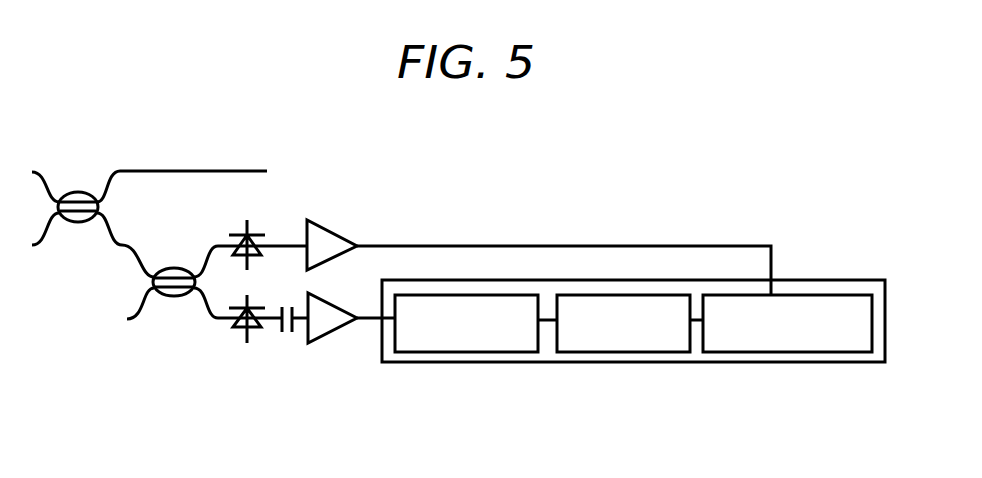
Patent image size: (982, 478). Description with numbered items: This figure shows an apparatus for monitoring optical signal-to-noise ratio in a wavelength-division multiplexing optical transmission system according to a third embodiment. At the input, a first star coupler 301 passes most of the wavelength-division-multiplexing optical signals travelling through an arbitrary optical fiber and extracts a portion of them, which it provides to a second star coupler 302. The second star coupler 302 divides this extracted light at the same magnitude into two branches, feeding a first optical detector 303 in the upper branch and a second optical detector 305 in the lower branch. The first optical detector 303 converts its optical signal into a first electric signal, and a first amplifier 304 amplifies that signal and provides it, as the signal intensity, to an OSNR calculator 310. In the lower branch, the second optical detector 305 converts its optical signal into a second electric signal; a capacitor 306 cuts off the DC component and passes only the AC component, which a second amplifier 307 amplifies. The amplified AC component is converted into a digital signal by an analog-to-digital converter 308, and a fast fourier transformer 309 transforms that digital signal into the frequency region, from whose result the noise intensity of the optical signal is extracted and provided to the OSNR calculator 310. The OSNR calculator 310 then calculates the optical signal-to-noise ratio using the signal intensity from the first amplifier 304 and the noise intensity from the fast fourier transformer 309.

The first star coupler 301 is at (98, 204).
The second star coupler 302 is at (153, 283).
The first optical detector 303 is at (255, 233).
The first amplifier 304 is at (333, 227).
The second optical detector 305 is at (240, 338).
The capacitor 306 is at (281, 333).
The second amplifier 307 is at (333, 332).
The analog-to-digital converter 308 is at (448, 352).
The fast fourier transformer 309 is at (587, 352).
The OSNR calculator 310 is at (762, 352).